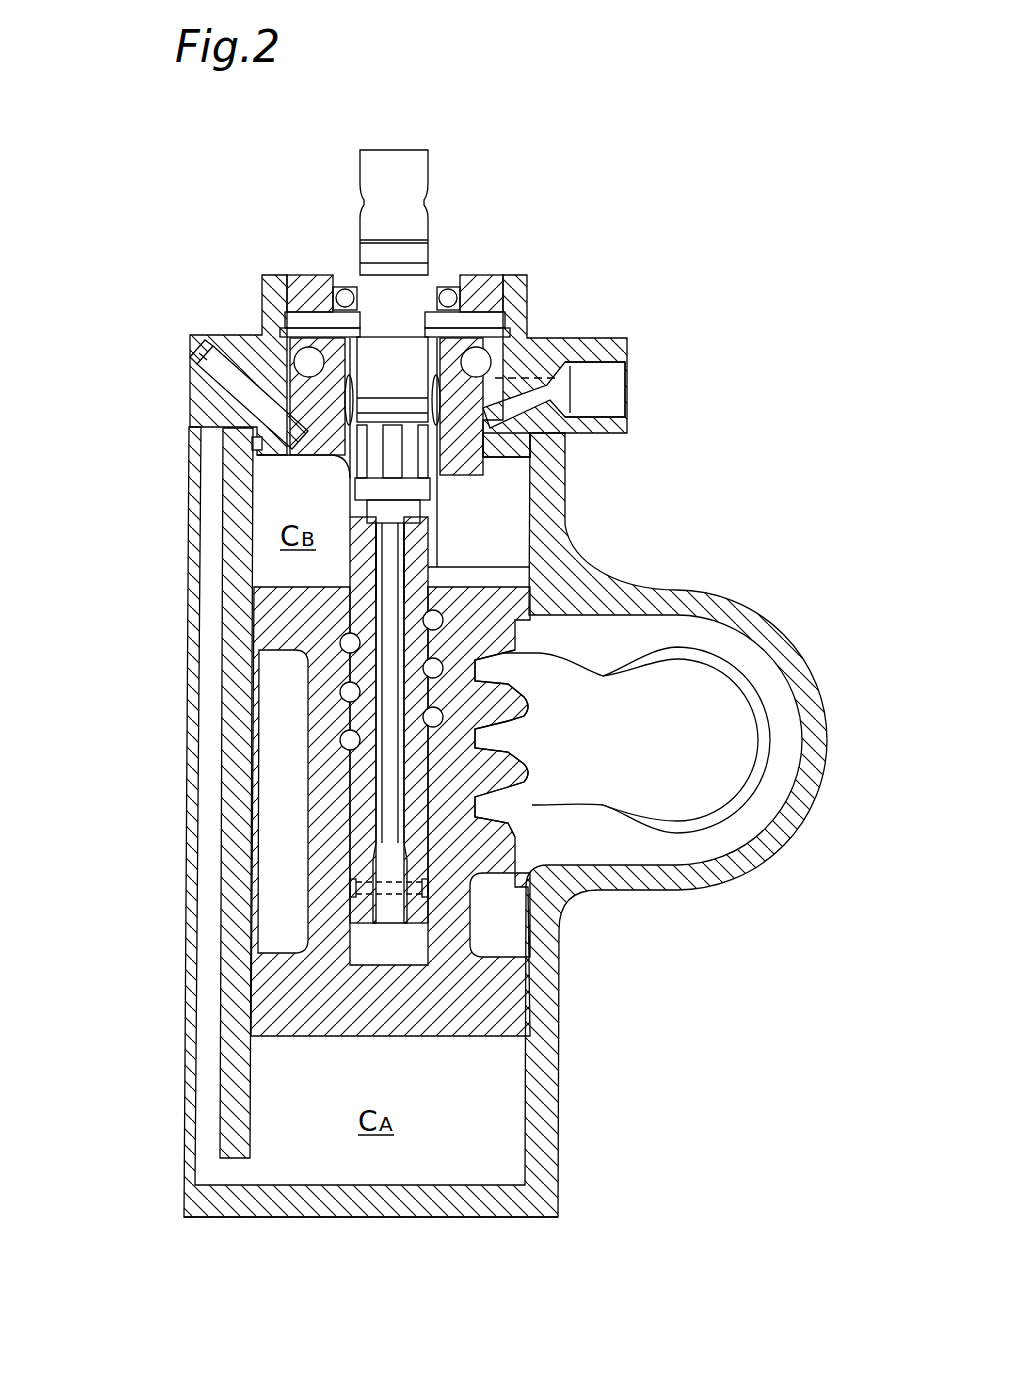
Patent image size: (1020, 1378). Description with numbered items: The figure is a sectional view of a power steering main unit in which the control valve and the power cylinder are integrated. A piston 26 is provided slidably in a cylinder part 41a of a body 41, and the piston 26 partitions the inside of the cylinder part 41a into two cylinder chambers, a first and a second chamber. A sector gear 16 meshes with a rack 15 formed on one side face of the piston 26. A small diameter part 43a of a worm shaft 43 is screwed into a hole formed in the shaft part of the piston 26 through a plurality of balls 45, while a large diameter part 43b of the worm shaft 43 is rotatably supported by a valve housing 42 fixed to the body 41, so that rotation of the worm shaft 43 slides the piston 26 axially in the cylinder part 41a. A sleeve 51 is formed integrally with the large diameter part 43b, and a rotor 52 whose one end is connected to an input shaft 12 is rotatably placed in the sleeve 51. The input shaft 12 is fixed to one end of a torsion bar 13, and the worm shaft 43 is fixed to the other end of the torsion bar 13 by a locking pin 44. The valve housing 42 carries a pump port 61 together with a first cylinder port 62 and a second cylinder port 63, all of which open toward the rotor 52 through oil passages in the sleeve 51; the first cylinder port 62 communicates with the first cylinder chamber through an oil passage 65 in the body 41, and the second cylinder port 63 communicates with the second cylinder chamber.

The input shaft 12 is at (397, 168).
The torsion bar 13 is at (393, 578).
The rack 15 is at (503, 853).
The sector gear 16 is at (532, 800).
The piston 26 is at (450, 1038).
The body 41 is at (752, 610).
The cylinder part 41a is at (388, 1216).
The valve housing 42 is at (538, 352).
The worm shaft 43 is at (357, 801).
The small diameter part 43a is at (355, 858).
The large diameter part 43b is at (335, 318).
The locking pin 44 is at (358, 888).
The balls 45 is at (340, 742).
The sleeve 51 is at (348, 400).
The rotor 52 is at (337, 492).
The pump port 61 is at (600, 388).
The first cylinder port 62 is at (265, 350).
The second cylinder port 63 is at (457, 477).
The oil passage 65 is at (209, 624).